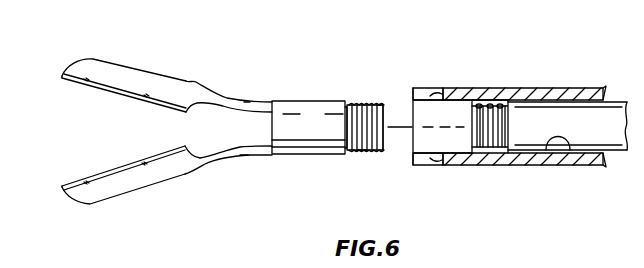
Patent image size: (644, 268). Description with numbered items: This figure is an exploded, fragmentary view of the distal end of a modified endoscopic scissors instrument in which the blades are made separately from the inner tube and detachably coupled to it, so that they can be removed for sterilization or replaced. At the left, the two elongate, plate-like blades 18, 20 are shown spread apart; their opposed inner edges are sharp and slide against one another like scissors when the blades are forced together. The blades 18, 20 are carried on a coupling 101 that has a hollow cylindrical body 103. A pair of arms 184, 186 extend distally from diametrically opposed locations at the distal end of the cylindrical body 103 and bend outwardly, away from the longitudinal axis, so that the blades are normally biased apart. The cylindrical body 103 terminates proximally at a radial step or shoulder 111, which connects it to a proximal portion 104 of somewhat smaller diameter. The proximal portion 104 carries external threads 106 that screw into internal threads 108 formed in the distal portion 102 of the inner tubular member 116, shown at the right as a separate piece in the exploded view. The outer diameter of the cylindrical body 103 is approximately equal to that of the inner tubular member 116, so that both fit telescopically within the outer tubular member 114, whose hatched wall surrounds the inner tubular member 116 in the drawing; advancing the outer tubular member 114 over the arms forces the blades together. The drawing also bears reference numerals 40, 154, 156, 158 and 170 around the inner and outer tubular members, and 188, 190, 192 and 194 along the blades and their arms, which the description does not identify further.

The blade 18 is at (108, 75).
The blade 20 is at (121, 189).
The outer tube assembly 40 is at (500, 116).
The coupling 101 is at (308, 130).
The distal portion 102 is at (515, 157).
The hollow cylindrical body 103 is at (301, 154).
The proximal portion 104 is at (380, 150).
The external threads 106 is at (362, 151).
The internal threads 108 is at (493, 108).
The radial step or shoulder 111 is at (348, 103).
The outer tubular member 114 is at (541, 85).
The inner tubular member 116 is at (567, 151).
The end cap 154 is at (432, 112).
The upper lip 156 is at (444, 92).
The lower lip 158 is at (430, 160).
The opening 170 is at (548, 166).
The arm 184 is at (247, 102).
The arm 186 is at (243, 157).
The upper jaw face 188 is at (93, 86).
The lower jaw face 190 is at (106, 164).
The upper stem 192 is at (192, 84).
The lower stem 194 is at (187, 178).